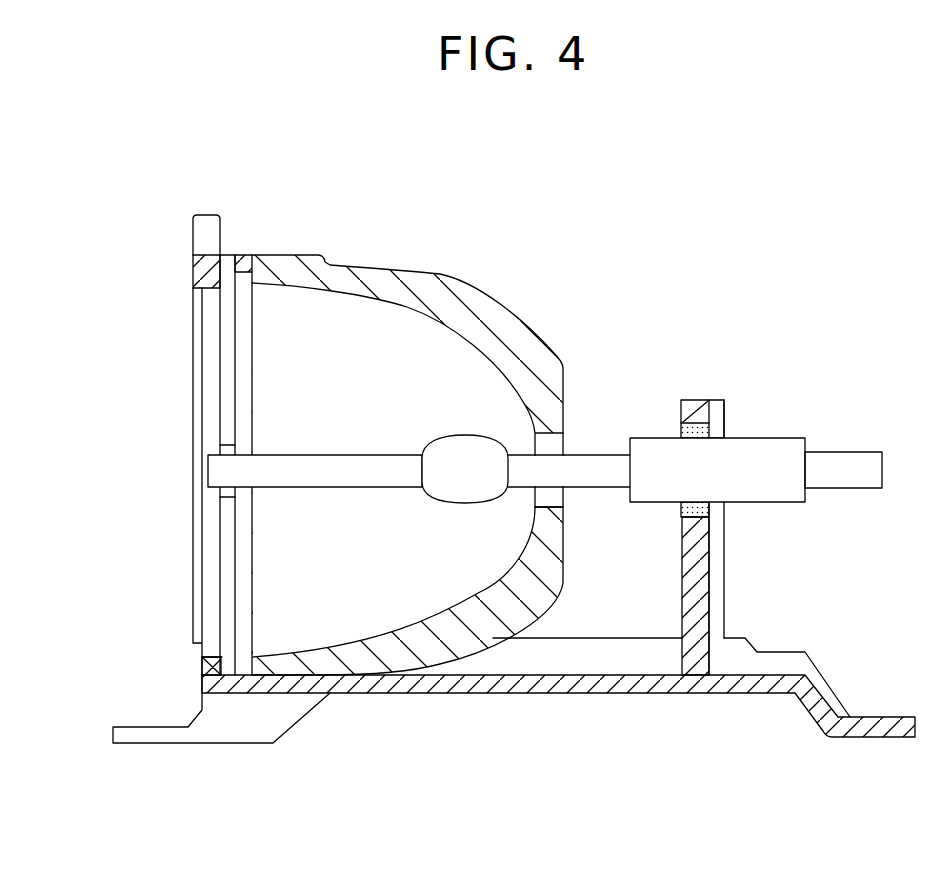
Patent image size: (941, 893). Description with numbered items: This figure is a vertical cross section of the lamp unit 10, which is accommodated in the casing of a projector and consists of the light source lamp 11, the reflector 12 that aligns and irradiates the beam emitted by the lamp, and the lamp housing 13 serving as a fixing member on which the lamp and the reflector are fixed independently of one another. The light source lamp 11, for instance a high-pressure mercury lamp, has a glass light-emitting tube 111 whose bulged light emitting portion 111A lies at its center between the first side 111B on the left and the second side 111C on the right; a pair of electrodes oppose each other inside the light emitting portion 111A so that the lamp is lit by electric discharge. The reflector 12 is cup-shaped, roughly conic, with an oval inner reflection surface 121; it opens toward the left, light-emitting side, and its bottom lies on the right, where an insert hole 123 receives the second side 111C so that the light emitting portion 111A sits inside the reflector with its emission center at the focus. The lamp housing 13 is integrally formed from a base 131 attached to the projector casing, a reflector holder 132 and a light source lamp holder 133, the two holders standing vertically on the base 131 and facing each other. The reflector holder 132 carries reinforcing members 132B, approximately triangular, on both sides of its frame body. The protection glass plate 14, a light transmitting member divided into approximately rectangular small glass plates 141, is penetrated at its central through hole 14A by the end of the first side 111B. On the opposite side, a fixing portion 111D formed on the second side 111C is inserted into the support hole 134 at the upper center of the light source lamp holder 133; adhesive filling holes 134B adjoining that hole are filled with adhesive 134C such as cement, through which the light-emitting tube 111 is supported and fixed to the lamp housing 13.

The lamp unit 10 is at (607, 253).
The light source lamp 11 is at (497, 422).
The light-emitting tube 111 is at (373, 488).
The light emitting portion 111A is at (462, 433).
The first side 111B is at (330, 450).
The second side 111C is at (588, 453).
The fixing portion 111D is at (768, 452).
The reflector 12 is at (486, 285).
The reflection surface 121 is at (377, 302).
The insert hole 123 is at (548, 503).
The lamp housing 13 is at (205, 770).
The base 131 is at (494, 690).
The reflector holder 132 is at (193, 405).
The reinforcing member 132B is at (300, 258).
The light source lamp holder 133 is at (720, 588).
The support hole 134 is at (678, 436).
The adhesive filling hole 134B is at (721, 435).
The adhesive 134C is at (697, 422).
The protection glass plate 14 is at (230, 318).
The small glass plate 141 is at (228, 365).
The through hole 14A is at (212, 452).